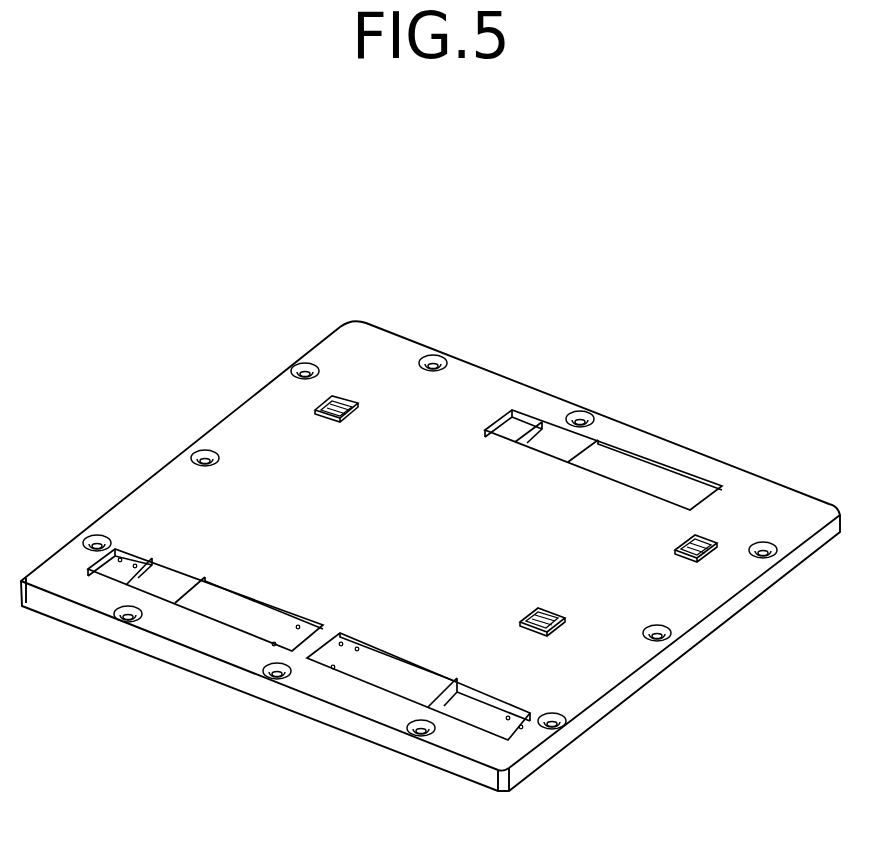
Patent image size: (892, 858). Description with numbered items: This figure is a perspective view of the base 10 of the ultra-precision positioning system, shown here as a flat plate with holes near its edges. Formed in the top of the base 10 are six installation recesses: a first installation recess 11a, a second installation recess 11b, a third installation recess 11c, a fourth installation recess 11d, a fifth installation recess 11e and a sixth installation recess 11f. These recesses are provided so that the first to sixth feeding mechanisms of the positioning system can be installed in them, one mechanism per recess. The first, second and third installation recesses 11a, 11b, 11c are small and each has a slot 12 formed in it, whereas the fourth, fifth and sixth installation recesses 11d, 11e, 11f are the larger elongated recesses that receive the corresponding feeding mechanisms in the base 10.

The base 10 is at (175, 497).
The first installation recess 11a is at (549, 632).
The second installation recess 11b is at (343, 405).
The third installation recess 11c is at (707, 540).
The fourth installation recess 11d is at (383, 675).
The fifth installation recess 11e is at (238, 613).
The sixth installation recess 11f is at (653, 473).
The slot 12 is at (315, 407).